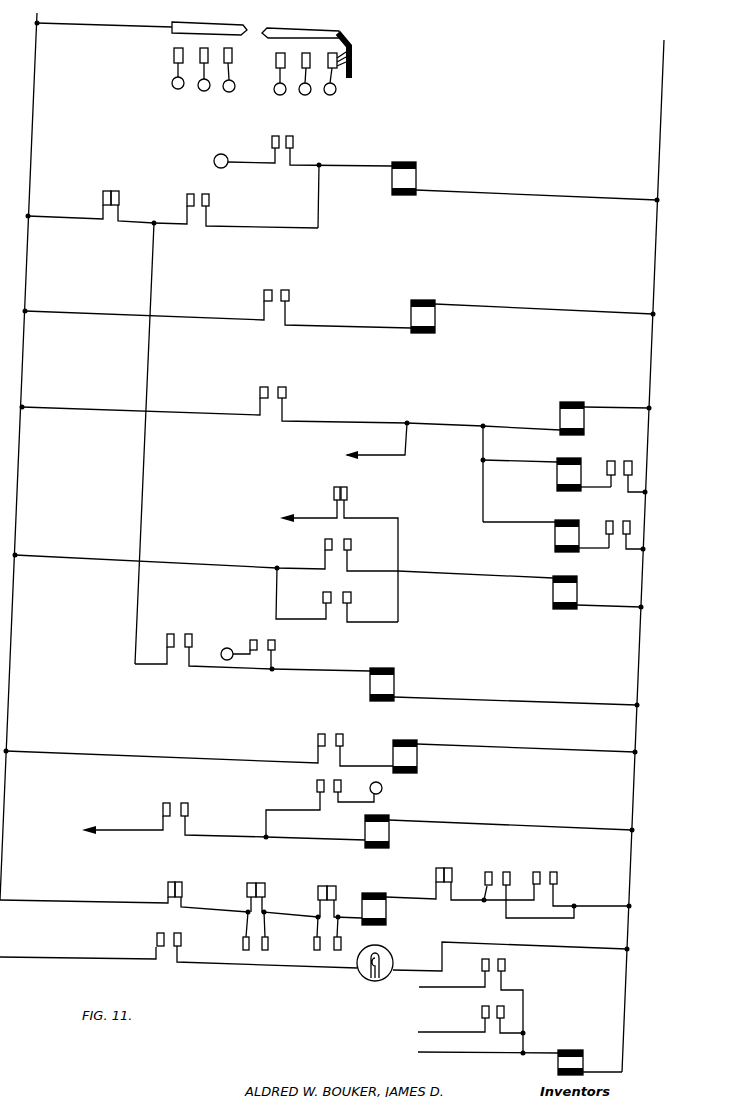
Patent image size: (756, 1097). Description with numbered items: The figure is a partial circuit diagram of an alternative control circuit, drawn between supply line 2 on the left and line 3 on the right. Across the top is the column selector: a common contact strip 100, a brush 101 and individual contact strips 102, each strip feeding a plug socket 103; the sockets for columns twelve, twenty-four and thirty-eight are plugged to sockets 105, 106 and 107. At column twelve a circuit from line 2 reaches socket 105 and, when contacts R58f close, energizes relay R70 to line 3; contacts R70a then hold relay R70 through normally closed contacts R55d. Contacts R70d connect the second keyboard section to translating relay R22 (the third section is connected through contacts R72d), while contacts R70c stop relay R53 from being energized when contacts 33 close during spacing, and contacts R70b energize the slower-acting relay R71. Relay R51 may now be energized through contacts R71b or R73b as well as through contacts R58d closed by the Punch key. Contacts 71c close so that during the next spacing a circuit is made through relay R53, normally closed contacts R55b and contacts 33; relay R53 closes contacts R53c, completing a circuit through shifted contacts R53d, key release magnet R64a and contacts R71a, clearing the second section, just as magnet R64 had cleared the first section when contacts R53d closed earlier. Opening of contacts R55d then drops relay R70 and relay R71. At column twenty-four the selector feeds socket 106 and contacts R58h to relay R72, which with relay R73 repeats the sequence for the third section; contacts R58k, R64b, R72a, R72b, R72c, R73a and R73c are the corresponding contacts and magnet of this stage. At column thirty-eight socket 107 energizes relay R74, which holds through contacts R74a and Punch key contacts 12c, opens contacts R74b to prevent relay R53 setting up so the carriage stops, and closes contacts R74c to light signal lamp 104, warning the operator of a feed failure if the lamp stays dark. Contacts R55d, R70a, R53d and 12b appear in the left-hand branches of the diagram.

The line 2 is at (38, 41).
The line 3 is at (661, 99).
The common contact strip 100 is at (315, 31).
The brush 101 is at (352, 69).
The individual contact strips 102 is at (174, 53).
The plug socket 103 is at (203, 91).
The plug socket 105 is at (226, 167).
The plug socket 106 is at (229, 660).
The plug socket 107 is at (381, 791).
The signal lamp 104 is at (358, 975).
The contacts 33 is at (540, 874).
The connection to circuit 12 12b is at (297, 509).
The Punch key contacts 12c is at (102, 819).
The relay contact 71c is at (318, 951).
The relay R22 is at (559, 1052).
The relay R51 is at (578, 590).
The relay R53 is at (385, 922).
The contacts R53c is at (486, 873).
The contacts R53d is at (283, 399).
The contacts R55b is at (436, 870).
The contacts R55d is at (91, 196).
The contacts R58d is at (363, 500).
The contacts R58f is at (284, 135).
The contacts R58h is at (264, 640).
The relay contact R58k is at (317, 780).
The key release magnet R64 is at (571, 401).
The key release magnet R64a is at (557, 459).
The relay R64b is at (558, 520).
The relay R70 is at (418, 168).
The contacts R70a is at (200, 195).
The contacts R70b is at (290, 297).
The contacts R70c is at (321, 886).
The contacts R70d is at (510, 1010).
The relay R71 is at (435, 299).
The contacts R71a is at (612, 459).
The contacts R71b is at (335, 538).
The relay R72 is at (396, 690).
The relay contact R72a is at (171, 652).
The relay contact R72b is at (347, 738).
The relay contact R72c is at (249, 884).
The contacts R72d is at (507, 965).
The relay R73 is at (405, 777).
The relay contact R73a is at (608, 520).
The contacts R73b is at (335, 606).
The relay contact R73c is at (243, 948).
The relay R74 is at (389, 832).
The contacts R74a is at (175, 800).
The contacts R74b is at (170, 882).
The contacts R74c is at (157, 948).